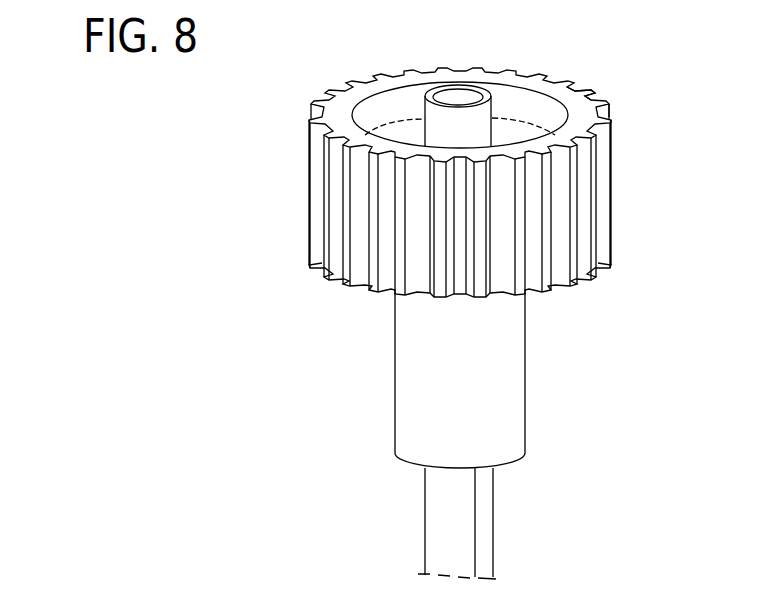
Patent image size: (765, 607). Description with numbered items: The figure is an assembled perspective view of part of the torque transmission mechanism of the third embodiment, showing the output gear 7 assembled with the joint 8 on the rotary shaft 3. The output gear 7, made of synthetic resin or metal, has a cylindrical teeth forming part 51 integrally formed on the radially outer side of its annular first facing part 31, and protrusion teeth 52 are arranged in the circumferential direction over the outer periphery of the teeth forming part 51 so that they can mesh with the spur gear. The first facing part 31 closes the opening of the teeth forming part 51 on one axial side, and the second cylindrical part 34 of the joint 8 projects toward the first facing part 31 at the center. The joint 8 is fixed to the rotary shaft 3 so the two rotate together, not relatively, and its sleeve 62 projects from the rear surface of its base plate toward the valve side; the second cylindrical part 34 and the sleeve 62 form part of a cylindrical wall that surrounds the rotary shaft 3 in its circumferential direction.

The rotary shaft 3 is at (495, 510).
The output gear 7 is at (329, 70).
The joint 8 is at (373, 472).
The first facing part 31 is at (527, 130).
The second cylindrical part 34 is at (487, 112).
The teeth forming part 51 is at (581, 96).
The protrusion teeth 52 is at (612, 118).
The sleeve 62 is at (527, 352).